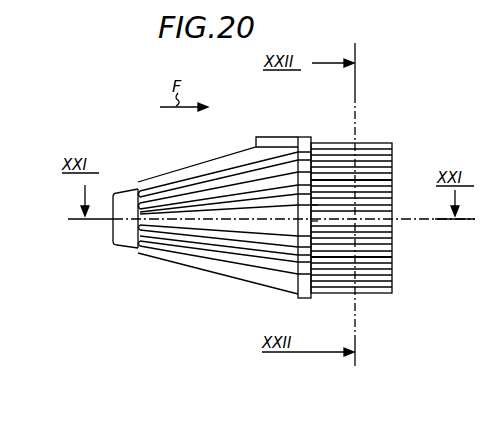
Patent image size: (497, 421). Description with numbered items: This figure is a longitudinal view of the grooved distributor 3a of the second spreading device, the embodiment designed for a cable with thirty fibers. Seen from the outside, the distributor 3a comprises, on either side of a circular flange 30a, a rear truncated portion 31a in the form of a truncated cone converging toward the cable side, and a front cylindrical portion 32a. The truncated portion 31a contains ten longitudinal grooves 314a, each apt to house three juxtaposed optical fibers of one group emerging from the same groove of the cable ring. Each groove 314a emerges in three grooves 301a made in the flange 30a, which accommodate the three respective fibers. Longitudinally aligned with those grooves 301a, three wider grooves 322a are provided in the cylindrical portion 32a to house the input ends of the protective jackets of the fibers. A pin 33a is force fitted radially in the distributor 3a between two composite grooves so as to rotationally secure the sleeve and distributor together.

The distributor 3a is at (112, 283).
The flange 30a is at (307, 298).
The grooves in flange 301a is at (314, 221).
The truncated portion 31a is at (215, 272).
The longitudinal grooves 314a is at (176, 239).
The cylindrical portion 32a is at (369, 294).
The wider grooves 322a is at (392, 207).
The pin 33a is at (265, 141).